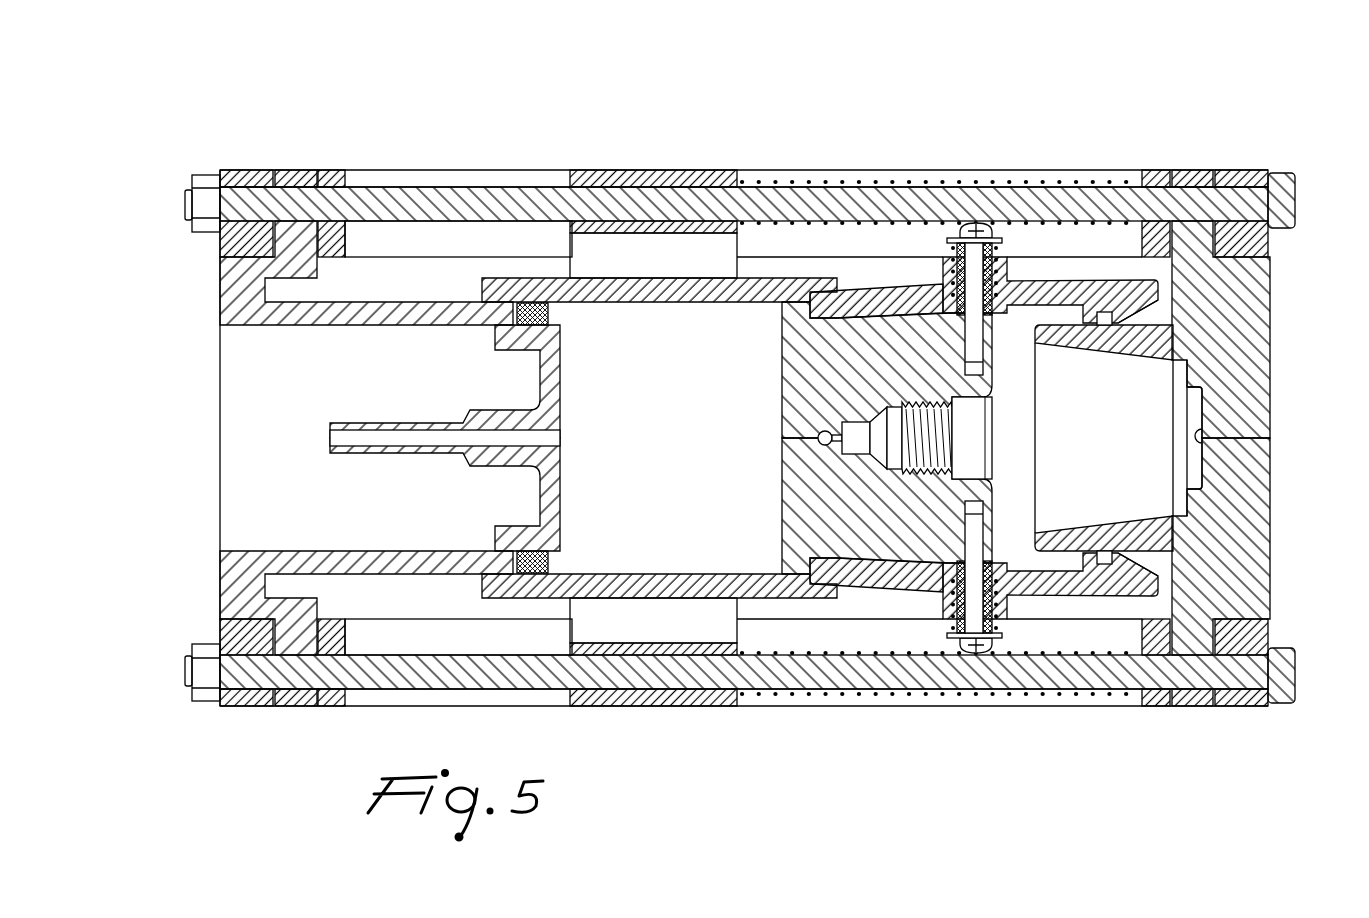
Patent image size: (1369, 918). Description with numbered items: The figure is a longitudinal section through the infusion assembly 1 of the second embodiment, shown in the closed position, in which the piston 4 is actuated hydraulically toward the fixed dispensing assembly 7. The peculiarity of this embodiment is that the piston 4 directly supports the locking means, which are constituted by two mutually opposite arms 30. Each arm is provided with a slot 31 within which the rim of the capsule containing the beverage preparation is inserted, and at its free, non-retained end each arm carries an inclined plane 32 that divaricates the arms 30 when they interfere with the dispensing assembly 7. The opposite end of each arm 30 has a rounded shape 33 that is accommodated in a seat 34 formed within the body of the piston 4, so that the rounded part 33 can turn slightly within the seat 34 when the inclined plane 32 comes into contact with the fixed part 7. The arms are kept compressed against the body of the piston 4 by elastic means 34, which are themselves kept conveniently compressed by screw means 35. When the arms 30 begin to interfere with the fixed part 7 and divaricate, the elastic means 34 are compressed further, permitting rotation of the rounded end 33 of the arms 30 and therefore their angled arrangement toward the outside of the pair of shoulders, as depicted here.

The clamping device 1 is at (1163, 136).
The piston 4 is at (866, 345).
The fixed dispensing assembly 7 is at (1235, 345).
The arms 30 is at (1042, 284).
The slot 31 is at (1100, 326).
The inclined plane 32 is at (1140, 313).
The rounded shape 33 is at (818, 598).
The seat 34 is at (807, 557).
The screw means 35 is at (953, 632).